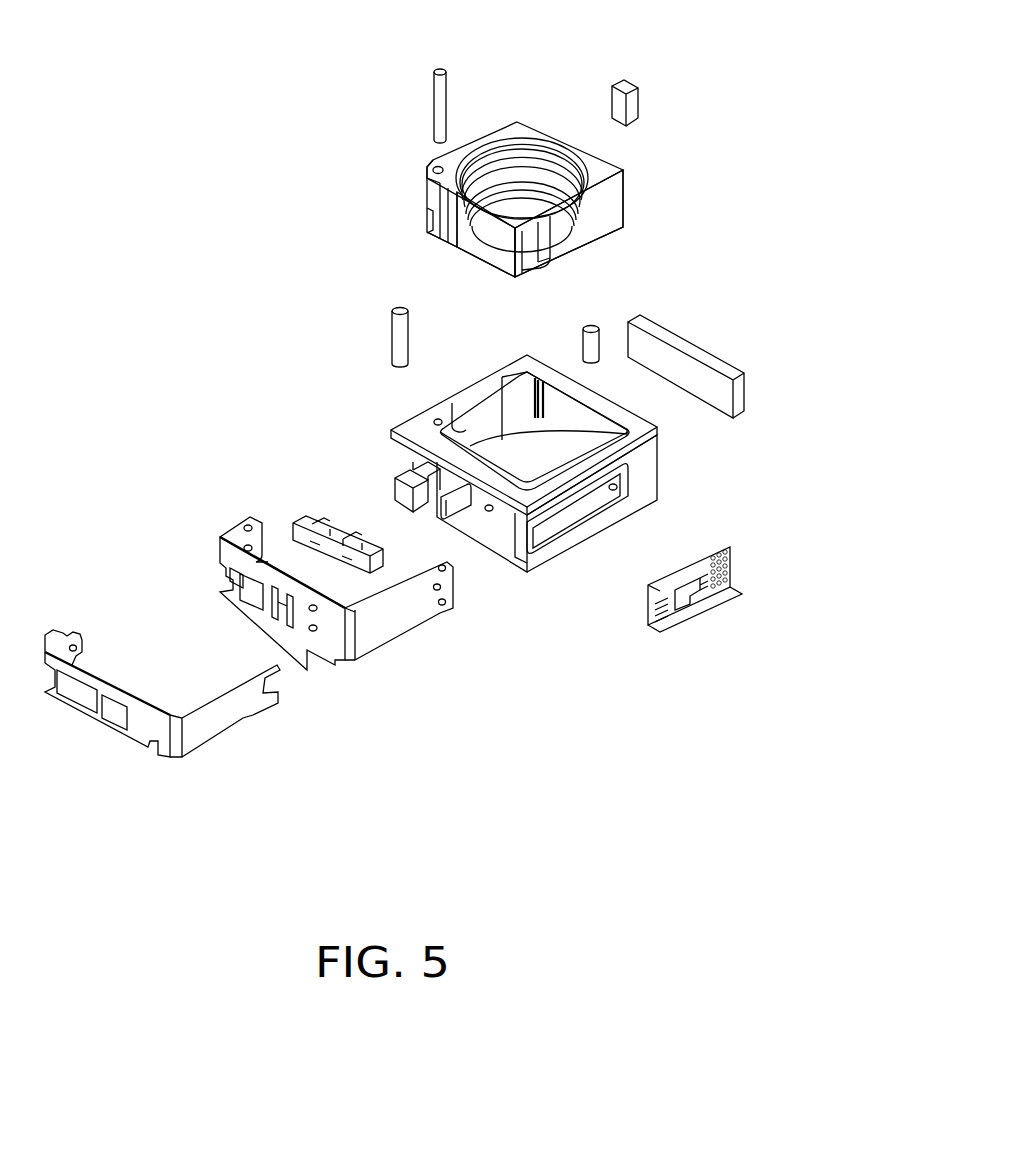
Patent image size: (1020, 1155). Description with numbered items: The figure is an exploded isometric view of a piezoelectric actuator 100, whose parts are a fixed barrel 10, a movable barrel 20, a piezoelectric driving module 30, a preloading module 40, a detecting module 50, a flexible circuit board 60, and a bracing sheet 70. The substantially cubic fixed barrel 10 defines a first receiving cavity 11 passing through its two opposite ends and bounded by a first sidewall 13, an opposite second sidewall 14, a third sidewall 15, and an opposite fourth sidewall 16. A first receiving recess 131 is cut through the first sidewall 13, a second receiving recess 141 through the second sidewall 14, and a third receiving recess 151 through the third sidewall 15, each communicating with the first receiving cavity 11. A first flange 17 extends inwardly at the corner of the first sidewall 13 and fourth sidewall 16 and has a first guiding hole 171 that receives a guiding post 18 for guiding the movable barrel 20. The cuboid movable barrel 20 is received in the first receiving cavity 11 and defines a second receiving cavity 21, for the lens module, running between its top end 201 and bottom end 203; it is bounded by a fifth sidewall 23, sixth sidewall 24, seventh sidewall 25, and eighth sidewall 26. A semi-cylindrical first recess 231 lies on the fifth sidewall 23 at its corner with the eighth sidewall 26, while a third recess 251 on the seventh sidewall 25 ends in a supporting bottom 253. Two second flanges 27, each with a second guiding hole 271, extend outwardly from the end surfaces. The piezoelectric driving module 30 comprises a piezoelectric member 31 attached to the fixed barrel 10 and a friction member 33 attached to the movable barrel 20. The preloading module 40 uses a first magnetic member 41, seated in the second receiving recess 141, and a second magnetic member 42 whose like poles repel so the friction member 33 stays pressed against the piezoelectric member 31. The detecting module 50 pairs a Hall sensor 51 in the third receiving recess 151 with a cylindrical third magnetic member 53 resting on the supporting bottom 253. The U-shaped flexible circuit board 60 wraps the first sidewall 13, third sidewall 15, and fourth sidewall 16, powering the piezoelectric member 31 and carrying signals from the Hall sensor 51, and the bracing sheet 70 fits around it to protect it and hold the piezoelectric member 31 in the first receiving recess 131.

The piezoelectric actuator 100 is at (216, 50).
The fixed barrel 10 is at (532, 583).
The first receiving cavity 11 is at (513, 463).
The first sidewall 13 is at (498, 538).
The first receiving recess 131 is at (443, 500).
The second sidewall 14 is at (550, 437).
The second receiving recess 141 is at (547, 400).
The third sidewall 15 is at (637, 494).
The third receiving recess 151 is at (549, 515).
The fourth sidewall 16 is at (458, 404).
The first flange 17 is at (406, 456).
The first guiding hole 171 is at (434, 420).
The guiding post 18 is at (432, 106).
The movable barrel 20 is at (410, 205).
The top end 201 is at (522, 133).
The bottom end 203 is at (470, 262).
The second receiving cavity 21 is at (549, 202).
The fifth sidewall 23 is at (503, 253).
The first recess 231 is at (446, 220).
The sixth sidewall 24 is at (552, 146).
The seventh sidewall 25 is at (604, 216).
The third recess 251 is at (538, 232).
The supporting bottom 253 is at (547, 262).
The eighth sidewall 26 is at (498, 126).
The second flange 27 is at (440, 162).
The second guiding hole 271 is at (434, 168).
The piezoelectric driving module 30 is at (264, 313).
The piezoelectric member 31 is at (334, 525).
The friction member 33 is at (398, 343).
The preloading module 40 is at (745, 140).
The first magnetic member 41 is at (656, 316).
The second magnetic member 42 is at (642, 114).
The detecting module 50 is at (760, 438).
The Hall sensor 51 is at (689, 566).
The third magnetic member 53 is at (600, 356).
The flexible circuit board 60 is at (393, 615).
The bracing sheet 70 is at (220, 712).